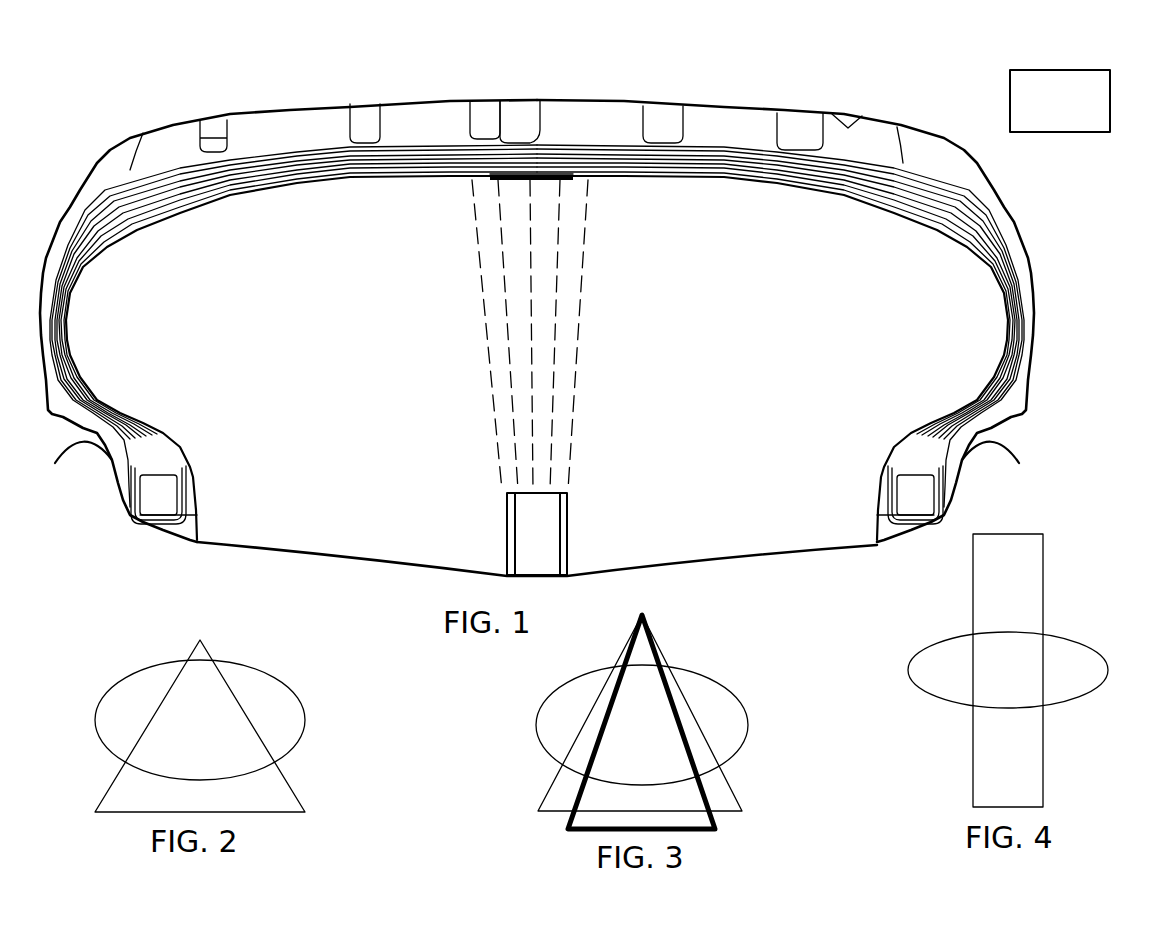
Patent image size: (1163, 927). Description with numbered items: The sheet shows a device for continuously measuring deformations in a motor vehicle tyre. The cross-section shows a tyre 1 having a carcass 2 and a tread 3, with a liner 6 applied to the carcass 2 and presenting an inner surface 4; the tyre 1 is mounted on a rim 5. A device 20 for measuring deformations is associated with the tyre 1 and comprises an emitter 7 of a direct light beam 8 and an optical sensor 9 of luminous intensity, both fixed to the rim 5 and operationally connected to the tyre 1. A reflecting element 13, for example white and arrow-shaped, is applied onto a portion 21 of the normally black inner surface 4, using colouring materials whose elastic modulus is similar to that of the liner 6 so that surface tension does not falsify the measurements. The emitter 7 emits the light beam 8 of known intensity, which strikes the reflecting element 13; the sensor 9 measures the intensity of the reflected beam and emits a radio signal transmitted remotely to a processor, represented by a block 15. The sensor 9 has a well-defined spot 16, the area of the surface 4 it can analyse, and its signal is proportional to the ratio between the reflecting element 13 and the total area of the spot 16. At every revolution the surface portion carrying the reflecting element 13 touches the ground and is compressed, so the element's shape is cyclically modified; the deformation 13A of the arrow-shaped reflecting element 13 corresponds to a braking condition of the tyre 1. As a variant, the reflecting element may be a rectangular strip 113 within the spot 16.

In FIG. 1, the tyre 1 is at (733, 103).
In FIG. 1, the carcass 2 is at (793, 174).
In FIG. 1, the tread 3 is at (435, 128).
In FIG. 1, the inner surface 4 is at (320, 178).
In FIG. 1, the rim 5 is at (331, 557).
In FIG. 1, the liner 6 is at (77, 243).
In FIG. 1, the emitter 7 is at (527, 543).
In FIG. 1, the light beam 8 is at (583, 295).
In FIG. 1, the optical sensor 9 is at (568, 543).
In FIG. 1, the reflecting element 13 is at (520, 180).
In FIG. 2, the reflecting element 13 is at (288, 776).
In FIG. 3, the reflecting element 13 is at (545, 797).
In FIG. 3, the deformation of the reflecting element 13A is at (715, 820).
In FIG. 1, the processor 15 is at (1033, 102).
In FIG. 2, the spot 16 is at (272, 680).
In FIG. 3, the spot 16 is at (708, 678).
In FIG. 4, the spot 16 is at (937, 697).
In FIG. 1, the device for measuring deformations 20 is at (580, 484).
In FIG. 1, the portion of the inner surface 21 is at (540, 176).
In FIG. 4, the rectangular strip 113 is at (1043, 600).